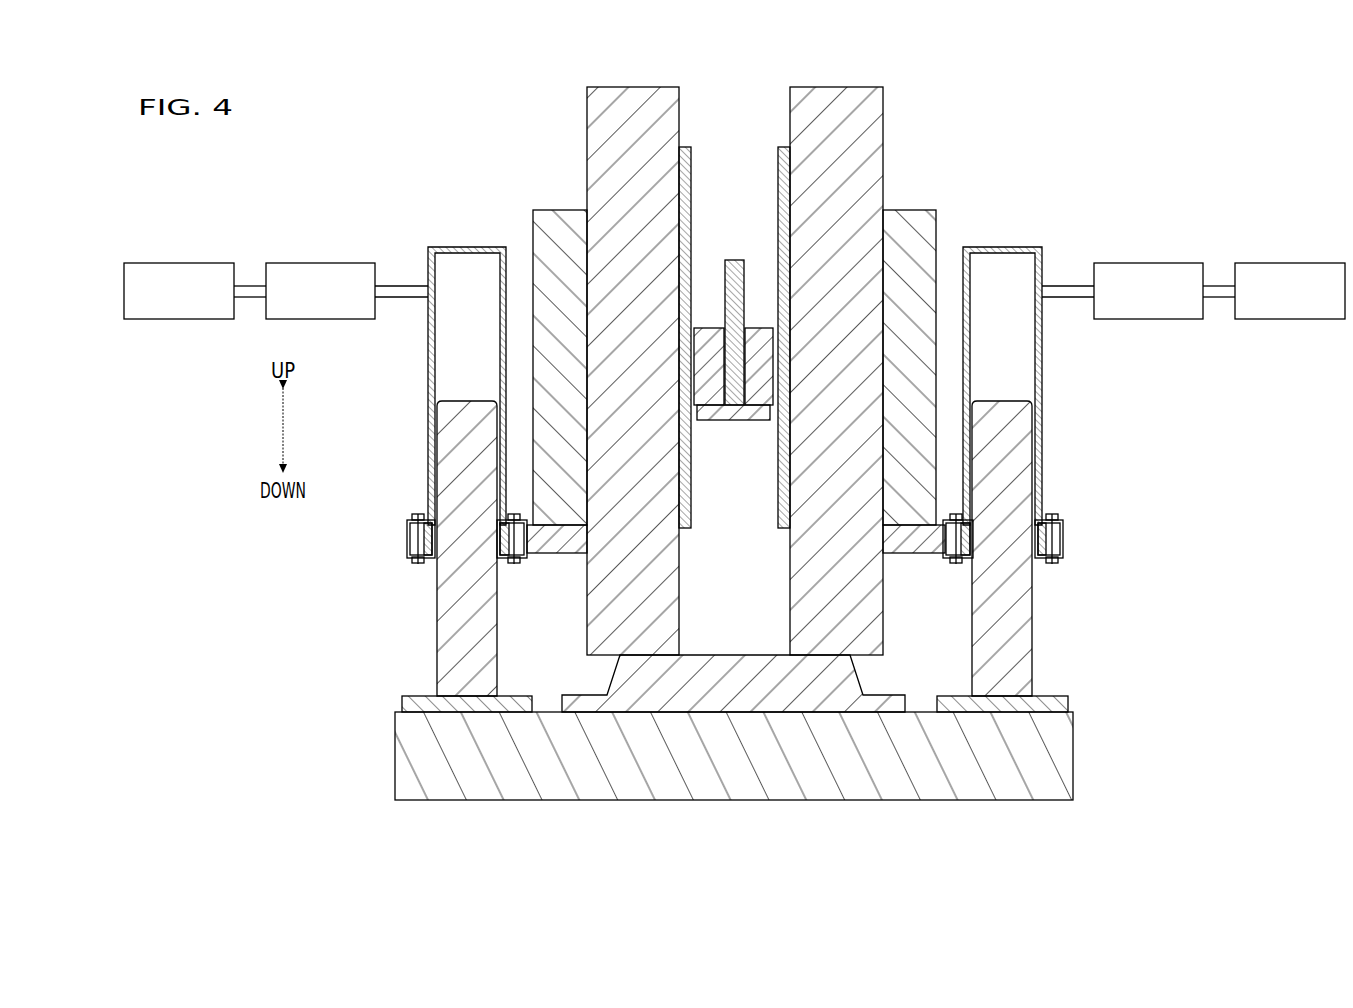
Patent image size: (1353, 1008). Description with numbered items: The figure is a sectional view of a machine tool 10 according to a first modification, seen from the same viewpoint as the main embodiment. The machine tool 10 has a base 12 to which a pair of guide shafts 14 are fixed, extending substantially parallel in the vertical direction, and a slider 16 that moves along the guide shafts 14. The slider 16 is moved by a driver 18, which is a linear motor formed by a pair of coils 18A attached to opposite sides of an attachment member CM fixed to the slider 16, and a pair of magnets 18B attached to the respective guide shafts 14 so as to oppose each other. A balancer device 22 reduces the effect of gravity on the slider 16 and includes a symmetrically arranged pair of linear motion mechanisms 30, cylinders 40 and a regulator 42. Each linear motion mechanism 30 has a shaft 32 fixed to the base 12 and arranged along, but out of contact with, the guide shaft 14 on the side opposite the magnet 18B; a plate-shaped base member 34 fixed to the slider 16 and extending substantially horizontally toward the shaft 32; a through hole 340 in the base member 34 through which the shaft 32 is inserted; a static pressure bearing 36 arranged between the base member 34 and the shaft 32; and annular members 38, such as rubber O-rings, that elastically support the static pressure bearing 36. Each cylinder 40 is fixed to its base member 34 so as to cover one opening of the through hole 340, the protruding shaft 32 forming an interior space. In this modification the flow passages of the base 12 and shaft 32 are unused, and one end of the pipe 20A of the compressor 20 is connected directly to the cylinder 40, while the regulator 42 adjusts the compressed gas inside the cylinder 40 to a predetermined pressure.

The machine tool 10 is at (1084, 115).
The base 12 is at (982, 792).
The guide shaft 14 is at (598, 132).
The slider 16 is at (906, 214).
The driver 18 is at (734, 365).
The coil 18A is at (707, 395).
The magnet 18B is at (690, 157).
The compressor 20 is at (155, 262).
The pipe 20A is at (405, 299).
The balancer device 22 is at (734, 360).
The linear motion mechanism 30 is at (734, 561).
The shaft 32 is at (446, 660).
The base member 34 is at (541, 554).
The through hole 340 is at (503, 568).
The static pressure bearing 36 is at (430, 562).
The annular member 38 is at (405, 530).
The cylinder 40 is at (463, 246).
The regulator 42 is at (297, 262).
The attachment member CM is at (738, 416).